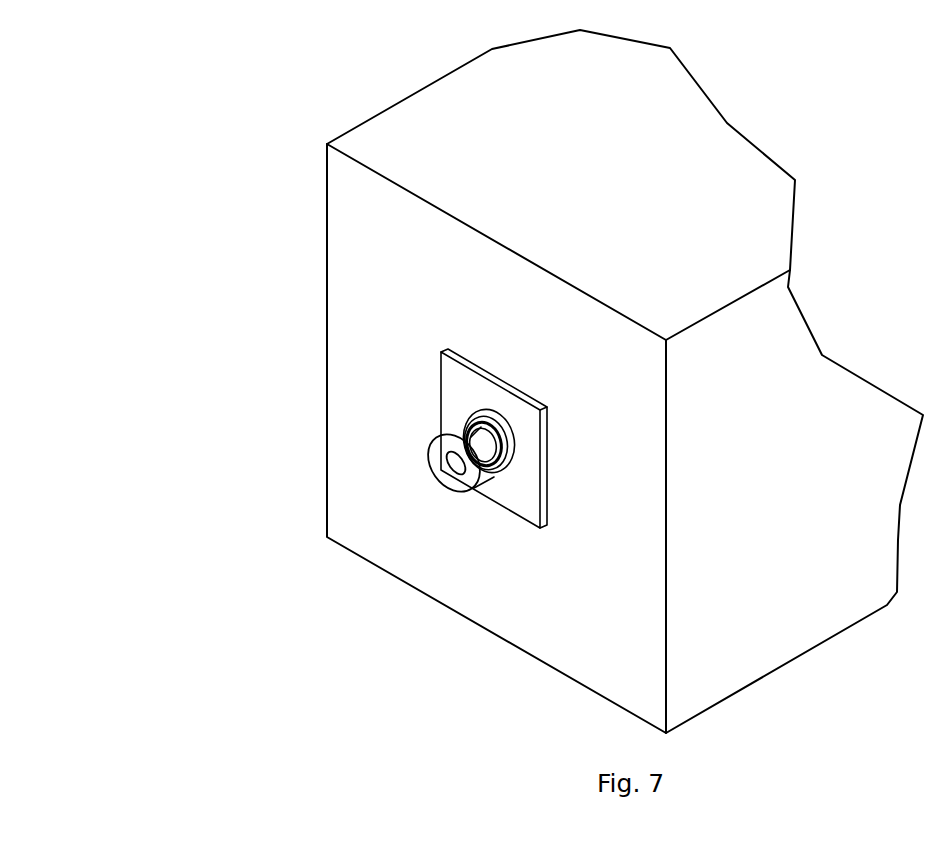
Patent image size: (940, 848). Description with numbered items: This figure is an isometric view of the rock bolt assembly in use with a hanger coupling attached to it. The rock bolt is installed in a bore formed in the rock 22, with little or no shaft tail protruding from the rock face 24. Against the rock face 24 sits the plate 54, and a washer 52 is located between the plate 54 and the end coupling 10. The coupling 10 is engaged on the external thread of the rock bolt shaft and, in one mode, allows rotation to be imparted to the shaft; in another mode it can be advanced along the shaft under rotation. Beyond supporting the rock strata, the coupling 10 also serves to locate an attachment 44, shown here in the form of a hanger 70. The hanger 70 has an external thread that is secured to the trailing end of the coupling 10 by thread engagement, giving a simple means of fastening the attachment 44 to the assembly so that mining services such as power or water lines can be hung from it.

The rock 22 is at (419, 142).
The rock face 24 is at (347, 285).
The plate 54 is at (452, 393).
The washer 52 is at (470, 412).
The end coupling 10 is at (505, 473).
The attachment 44 is at (442, 473).
The hanger 70 is at (452, 487).